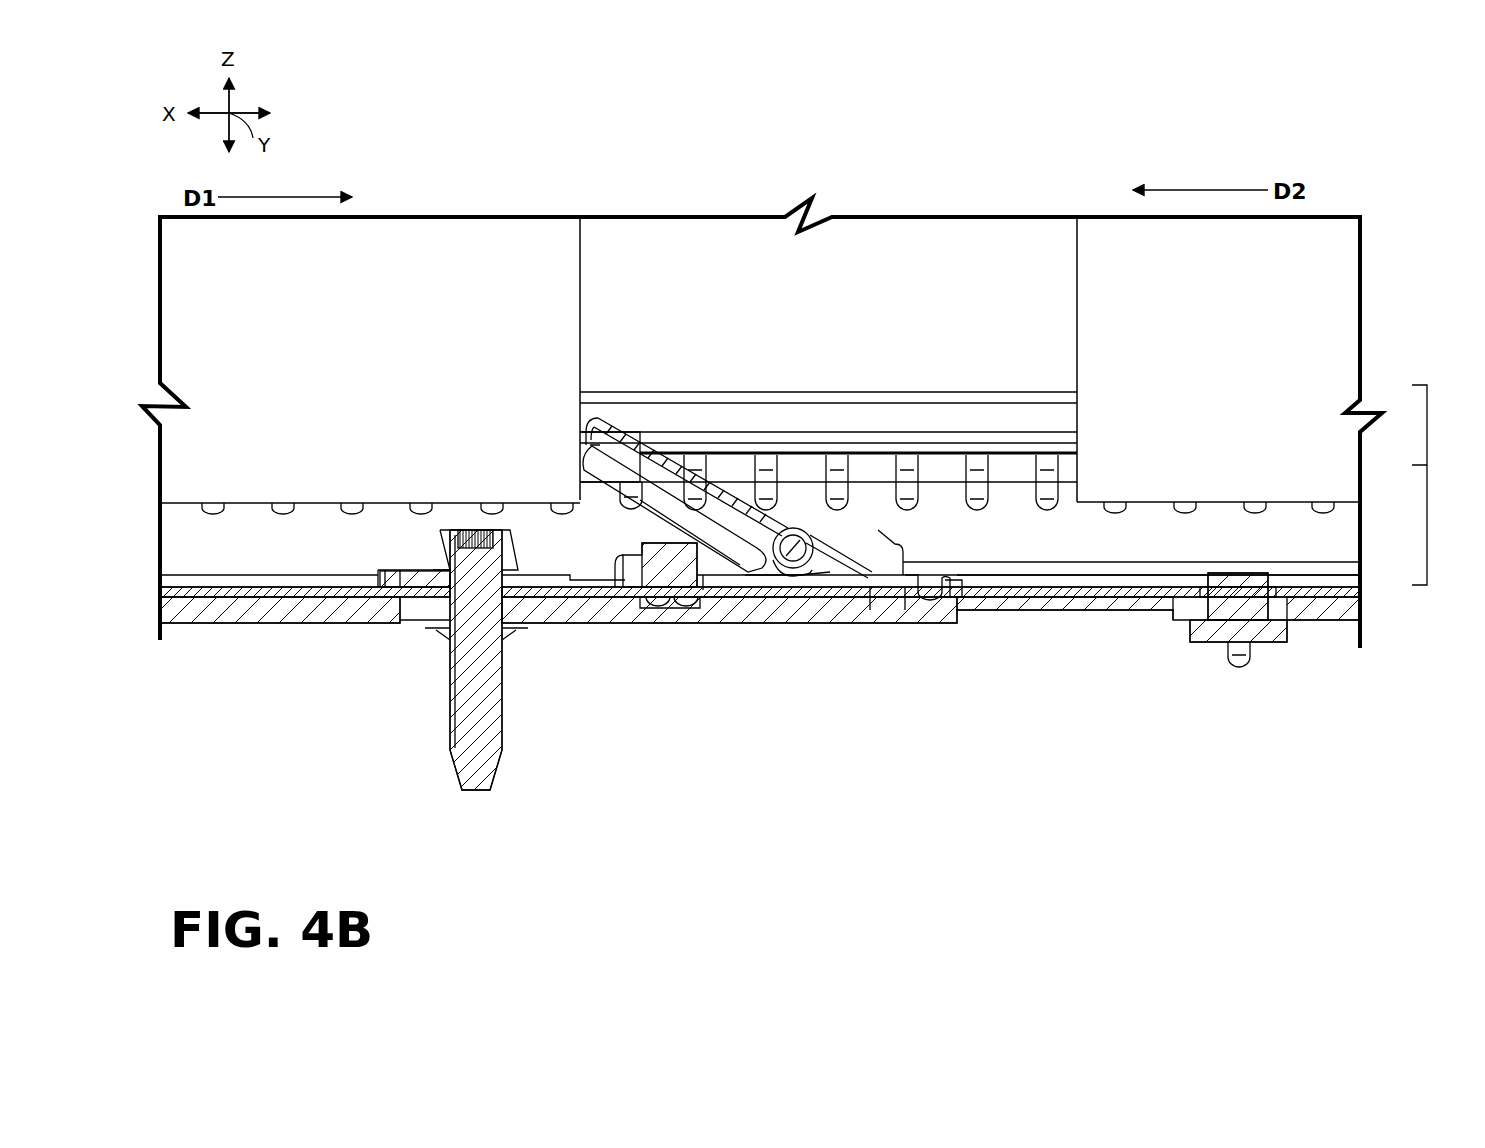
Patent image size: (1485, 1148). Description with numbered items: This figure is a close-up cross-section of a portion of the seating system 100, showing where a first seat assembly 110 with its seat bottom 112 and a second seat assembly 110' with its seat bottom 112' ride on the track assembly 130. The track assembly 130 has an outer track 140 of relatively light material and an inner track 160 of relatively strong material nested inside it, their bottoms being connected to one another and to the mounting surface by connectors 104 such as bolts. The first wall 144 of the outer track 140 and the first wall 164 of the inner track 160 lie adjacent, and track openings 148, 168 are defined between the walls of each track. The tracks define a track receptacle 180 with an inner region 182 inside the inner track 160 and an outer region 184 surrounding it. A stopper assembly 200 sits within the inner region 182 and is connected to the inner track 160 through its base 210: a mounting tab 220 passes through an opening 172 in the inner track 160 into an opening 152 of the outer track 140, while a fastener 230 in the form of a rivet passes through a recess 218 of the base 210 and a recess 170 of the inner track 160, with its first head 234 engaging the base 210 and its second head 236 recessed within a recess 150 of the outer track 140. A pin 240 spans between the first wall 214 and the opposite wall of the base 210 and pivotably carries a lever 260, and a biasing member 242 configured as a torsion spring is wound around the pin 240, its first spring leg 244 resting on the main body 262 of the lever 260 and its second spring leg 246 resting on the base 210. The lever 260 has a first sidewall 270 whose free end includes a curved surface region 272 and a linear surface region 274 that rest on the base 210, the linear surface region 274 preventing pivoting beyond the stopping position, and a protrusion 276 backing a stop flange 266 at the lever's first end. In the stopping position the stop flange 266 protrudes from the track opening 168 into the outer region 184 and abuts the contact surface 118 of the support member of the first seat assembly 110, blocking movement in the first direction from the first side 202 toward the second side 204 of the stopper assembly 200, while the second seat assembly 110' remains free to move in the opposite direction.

The seating system 100 is at (930, 193).
The connector 104 is at (453, 658).
The first seat assembly 110 is at (361, 427).
The seat bottom 112 is at (760, 215).
The second seat assembly 110' is at (1229, 431).
The seat bottom 112' is at (828, 359).
The contact surface 118 is at (578, 470).
The track assembly 130 is at (237, 632).
The outer track 140 is at (1117, 618).
The first wall 144 is at (1052, 415).
The track opening 148 is at (1045, 388).
The recess 150 is at (700, 640).
The opening 152 is at (867, 625).
The inner track 160 is at (1172, 635).
The first wall 164 is at (1218, 540).
The track opening 168 is at (1028, 447).
The recess 170 is at (668, 600).
The opening 172 is at (945, 587).
The track receptacle 180 is at (1291, 560).
The inner region 182 is at (1406, 525).
The outer region 184 is at (1406, 425).
The stopper assembly 200 is at (942, 540).
The first side 202 is at (407, 745).
The second side 204 is at (1198, 722).
The base 210 is at (868, 625).
The first wall 214 is at (940, 530).
The recess 218 is at (650, 557).
The mounting tab 220 is at (907, 625).
The fastener 230 is at (695, 605).
The first head 234 is at (622, 580).
The second head 236 is at (702, 600).
The pin 240 is at (870, 448).
The biasing member 242 is at (805, 448).
The first spring leg 244 is at (778, 440).
The second spring leg 246 is at (762, 625).
The lever 260 is at (590, 425).
The main body 262 is at (737, 425).
The stop flange 266 is at (582, 450).
The first sidewall 270 is at (655, 500).
The curved surface region 272 is at (792, 625).
The linear surface region 274 is at (878, 530).
The protrusion 276 is at (617, 428).